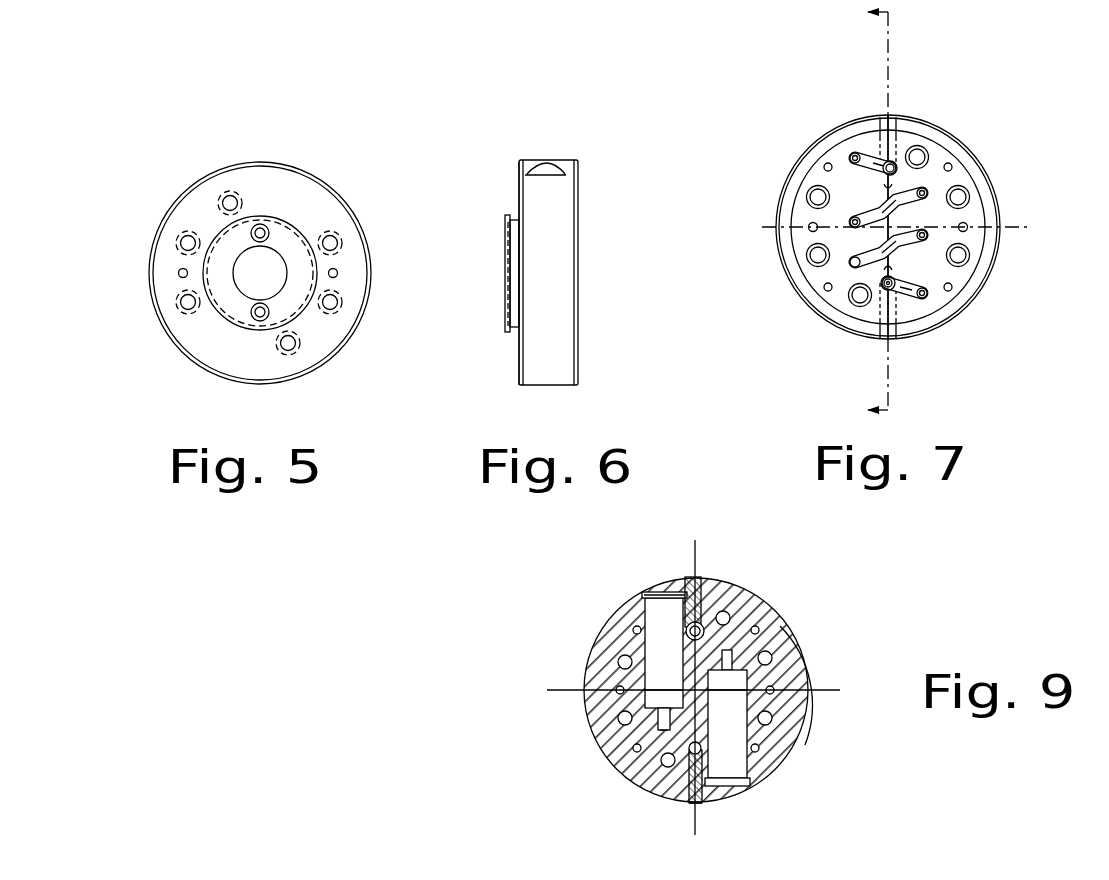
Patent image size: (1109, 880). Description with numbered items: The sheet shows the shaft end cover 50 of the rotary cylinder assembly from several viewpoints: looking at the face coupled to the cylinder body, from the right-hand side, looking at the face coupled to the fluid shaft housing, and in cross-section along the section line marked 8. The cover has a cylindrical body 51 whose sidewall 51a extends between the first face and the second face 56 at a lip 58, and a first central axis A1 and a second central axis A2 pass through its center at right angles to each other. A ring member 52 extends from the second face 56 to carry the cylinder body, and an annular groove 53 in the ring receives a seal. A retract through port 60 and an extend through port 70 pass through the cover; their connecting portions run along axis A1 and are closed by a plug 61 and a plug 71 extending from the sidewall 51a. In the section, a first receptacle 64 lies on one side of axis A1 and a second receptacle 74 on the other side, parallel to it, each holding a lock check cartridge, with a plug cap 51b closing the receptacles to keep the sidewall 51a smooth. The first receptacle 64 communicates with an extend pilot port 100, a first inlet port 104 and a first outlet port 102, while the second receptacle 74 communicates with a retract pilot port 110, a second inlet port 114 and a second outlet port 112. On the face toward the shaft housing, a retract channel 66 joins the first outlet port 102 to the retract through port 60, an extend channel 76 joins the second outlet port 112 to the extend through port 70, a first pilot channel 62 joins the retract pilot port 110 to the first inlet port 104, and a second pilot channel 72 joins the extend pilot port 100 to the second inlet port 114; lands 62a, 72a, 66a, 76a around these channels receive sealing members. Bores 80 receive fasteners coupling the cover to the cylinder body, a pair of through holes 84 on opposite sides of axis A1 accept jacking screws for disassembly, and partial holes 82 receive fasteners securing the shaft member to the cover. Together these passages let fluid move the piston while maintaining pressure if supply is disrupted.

In FIG. 5, the shaft end cover 50 is at (128, 368).
In FIG. 6, the shaft end cover 50 is at (545, 104).
In FIG. 7, the shaft end cover 50 is at (1031, 378).
In FIG. 9, the shaft end cover 50 is at (541, 660).
In FIG. 5, the body 51 is at (310, 168).
In FIG. 6, the body 51 is at (517, 372).
In FIG. 7, the body 51 is at (936, 120).
In FIG. 9, the body 51 is at (791, 615).
In FIG. 5, the sidewall 51a is at (226, 164).
In FIG. 6, the sidewall 51a is at (566, 160).
In FIG. 9, the sidewall 51a is at (803, 731).
In FIG. 6, the plug cap 51b is at (538, 165).
In FIG. 5, the ring member 52 is at (223, 321).
In FIG. 6, the ring member 52 is at (505, 223).
In FIG. 6, the annular groove 53 is at (515, 213).
In FIG. 6, the second face 56 is at (519, 165).
In FIG. 7, the lip 58 is at (908, 127).
In FIG. 5, the retract through port 60 is at (262, 226).
In FIG. 7, the retract through port 60 is at (885, 157).
In FIG. 9, the retract through port 60 is at (701, 625).
In FIG. 9, the plug 61 is at (692, 578).
In FIG. 7, the first pilot channel 62 is at (852, 215).
In FIG. 7, the land 62a is at (876, 200).
In FIG. 9, the first receptacle 64 is at (645, 648).
In FIG. 7, the retract channel 66 is at (864, 160).
In FIG. 7, the land 66a is at (875, 160).
In FIG. 5, the extend through port 70 is at (260, 319).
In FIG. 7, the extend through port 70 is at (889, 291).
In FIG. 9, the extend through port 70 is at (692, 752).
In FIG. 9, the plug 71 is at (690, 804).
In FIG. 7, the second pilot channel 72 is at (850, 265).
In FIG. 7, the land 72a is at (856, 272).
In FIG. 9, the second receptacle 74 is at (740, 731).
In FIG. 7, the extend channel 76 is at (905, 295).
In FIG. 7, the land 76a is at (925, 297).
In FIG. 5, the bores 80 is at (225, 196).
In FIG. 7, the bores 80 is at (812, 196).
In FIG. 7, the holes 82 is at (850, 160).
In FIG. 5, the through holes 84 is at (180, 272).
In FIG. 7, the through holes 84 is at (808, 227).
In FIG. 7, the extend pilot port 100 is at (882, 290).
In FIG. 9, the extend pilot port 100 is at (660, 731).
In FIG. 7, the first outlet port 102 is at (828, 163).
In FIG. 7, the first inlet port 104 is at (857, 212).
In FIG. 7, the retract pilot port 110 is at (925, 197).
In FIG. 9, the retract pilot port 110 is at (730, 647).
In FIG. 7, the second outlet port 112 is at (922, 298).
In FIG. 7, the second inlet port 114 is at (924, 240).
In FIG. 7, the section line 8- 8 is at (863, 210).
In FIG. 7, the first central axis A1 is at (889, 90).
In FIG. 9, the first central axis A1 is at (696, 553).
In FIG. 7, the second central axis A2 is at (1028, 227).
In FIG. 9, the second central axis A2 is at (829, 688).